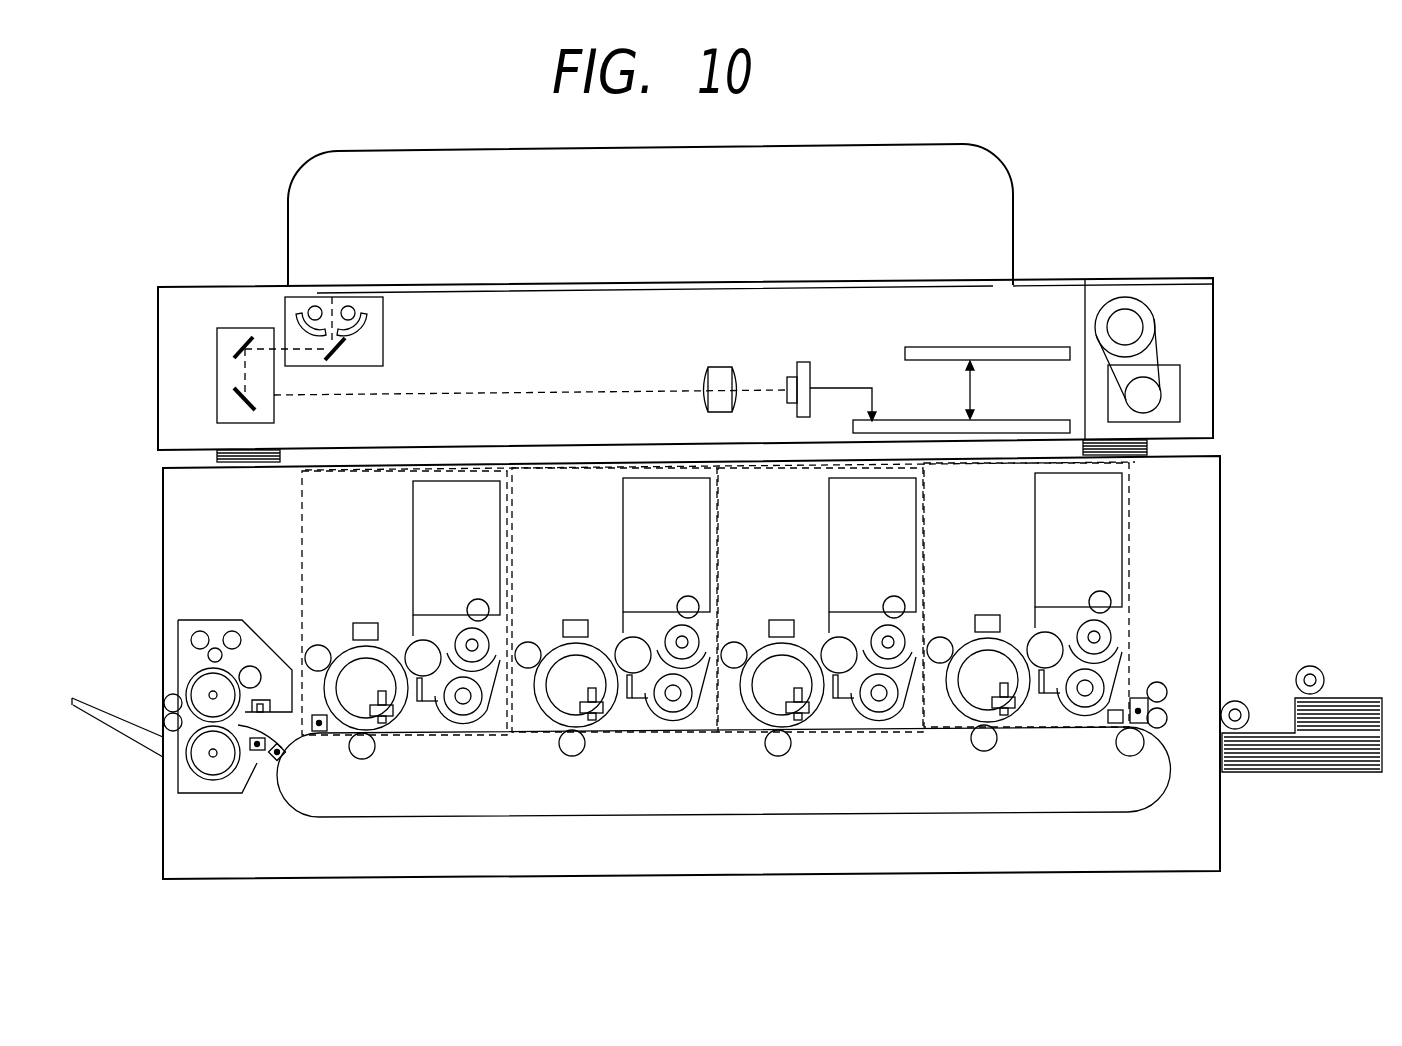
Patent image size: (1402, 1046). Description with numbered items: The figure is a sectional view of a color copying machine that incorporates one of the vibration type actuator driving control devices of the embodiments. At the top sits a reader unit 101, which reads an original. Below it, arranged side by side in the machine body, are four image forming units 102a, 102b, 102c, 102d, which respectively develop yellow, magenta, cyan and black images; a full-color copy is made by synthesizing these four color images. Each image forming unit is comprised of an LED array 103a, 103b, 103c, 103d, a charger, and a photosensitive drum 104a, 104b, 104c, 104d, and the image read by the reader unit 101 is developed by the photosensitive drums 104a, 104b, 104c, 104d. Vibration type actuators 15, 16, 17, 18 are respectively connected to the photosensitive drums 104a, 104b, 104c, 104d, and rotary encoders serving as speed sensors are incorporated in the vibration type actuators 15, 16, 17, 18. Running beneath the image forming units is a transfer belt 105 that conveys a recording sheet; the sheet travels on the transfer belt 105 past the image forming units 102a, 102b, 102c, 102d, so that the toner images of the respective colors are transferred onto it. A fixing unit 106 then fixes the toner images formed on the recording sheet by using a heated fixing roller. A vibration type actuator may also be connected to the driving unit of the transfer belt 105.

The reader unit 101 is at (1058, 278).
The image forming unit 102a is at (359, 633).
The image forming unit 102b is at (608, 597).
The image forming unit 102c is at (777, 597).
The image forming unit 102d is at (1107, 624).
The LED array 103a is at (359, 602).
The LED array 103b is at (576, 618).
The LED array 103c is at (778, 599).
The LED array 103d is at (984, 594).
The photosensitive drum 104a is at (443, 602).
The photosensitive drum 104b is at (597, 647).
The photosensitive drum 104c is at (859, 599).
The photosensitive drum 104d is at (1067, 594).
The transfer belt 105 is at (1042, 812).
The fixing unit 106 is at (212, 620).
The vibration type actuator 15 is at (350, 720).
The vibration type actuator 16 is at (553, 696).
The vibration type actuator 17 is at (767, 718).
The vibration type actuator 18 is at (971, 711).